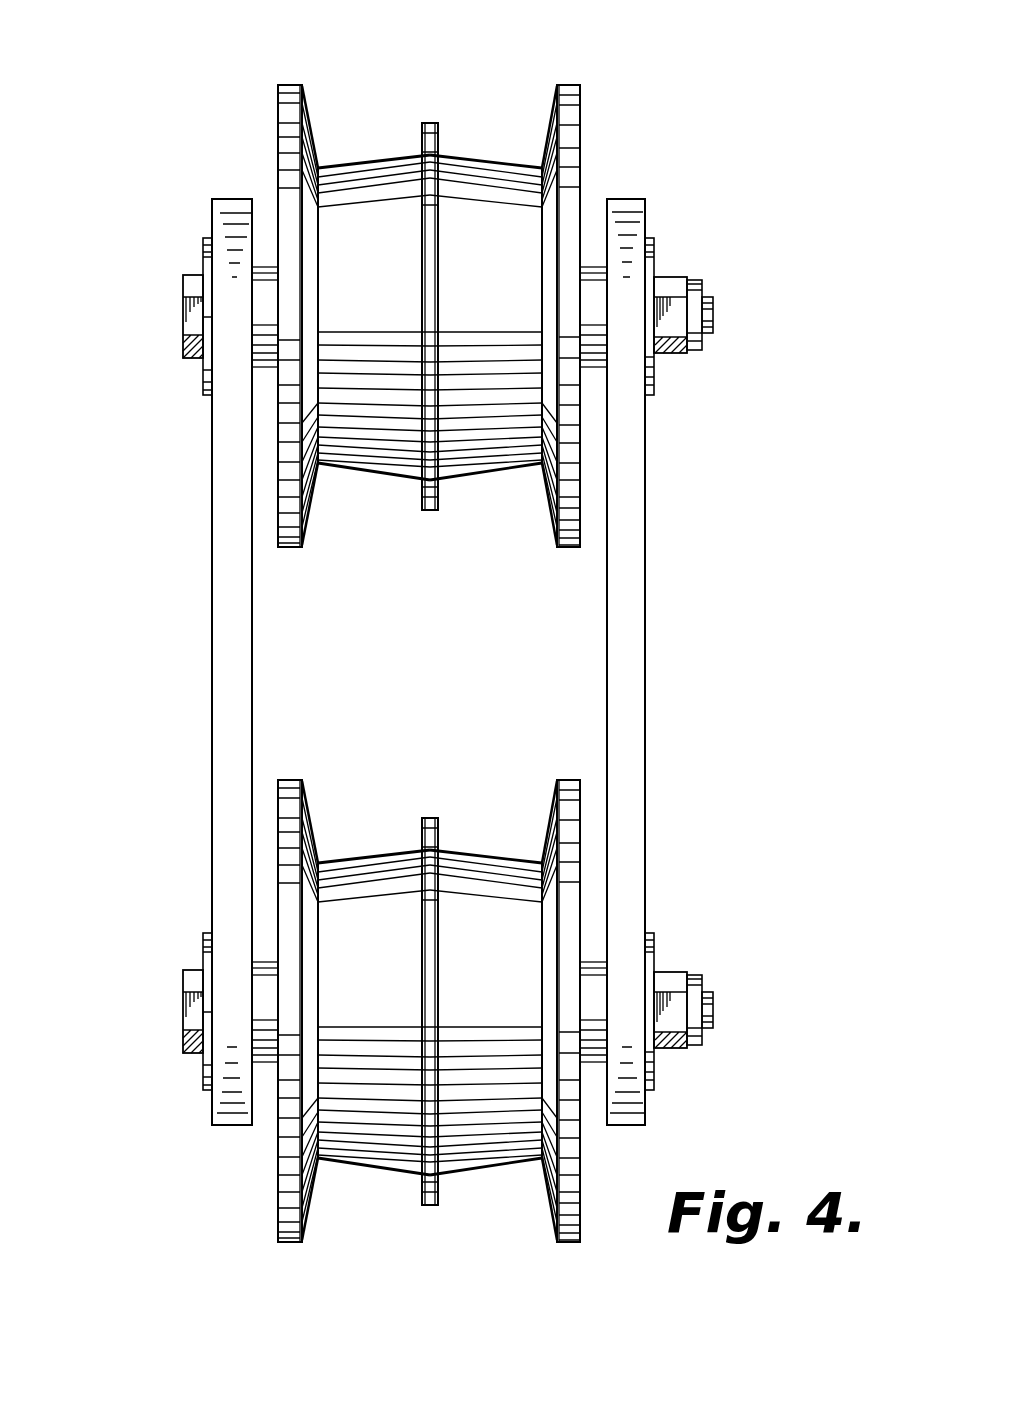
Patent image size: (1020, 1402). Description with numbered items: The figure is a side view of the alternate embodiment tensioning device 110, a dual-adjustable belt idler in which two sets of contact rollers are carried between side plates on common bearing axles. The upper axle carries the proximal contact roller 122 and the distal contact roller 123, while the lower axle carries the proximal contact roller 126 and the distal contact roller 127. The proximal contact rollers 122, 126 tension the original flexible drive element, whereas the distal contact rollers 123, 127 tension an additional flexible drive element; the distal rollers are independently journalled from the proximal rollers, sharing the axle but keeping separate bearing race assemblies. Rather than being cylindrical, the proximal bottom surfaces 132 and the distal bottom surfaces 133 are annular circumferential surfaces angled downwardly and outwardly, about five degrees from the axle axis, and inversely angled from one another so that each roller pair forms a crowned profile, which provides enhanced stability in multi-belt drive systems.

The tensioning device 110 is at (157, 123).
The left upper proximal contact roller 122 is at (520, 124).
The left upper distal contact roller 123 is at (346, 120).
The left lower proximal contact roller 126 is at (519, 1198).
The left lower distal contact roller 127 is at (344, 1204).
The proximal bottom surfaces 132 is at (477, 155).
The distal bottom surfaces 133 is at (380, 155).